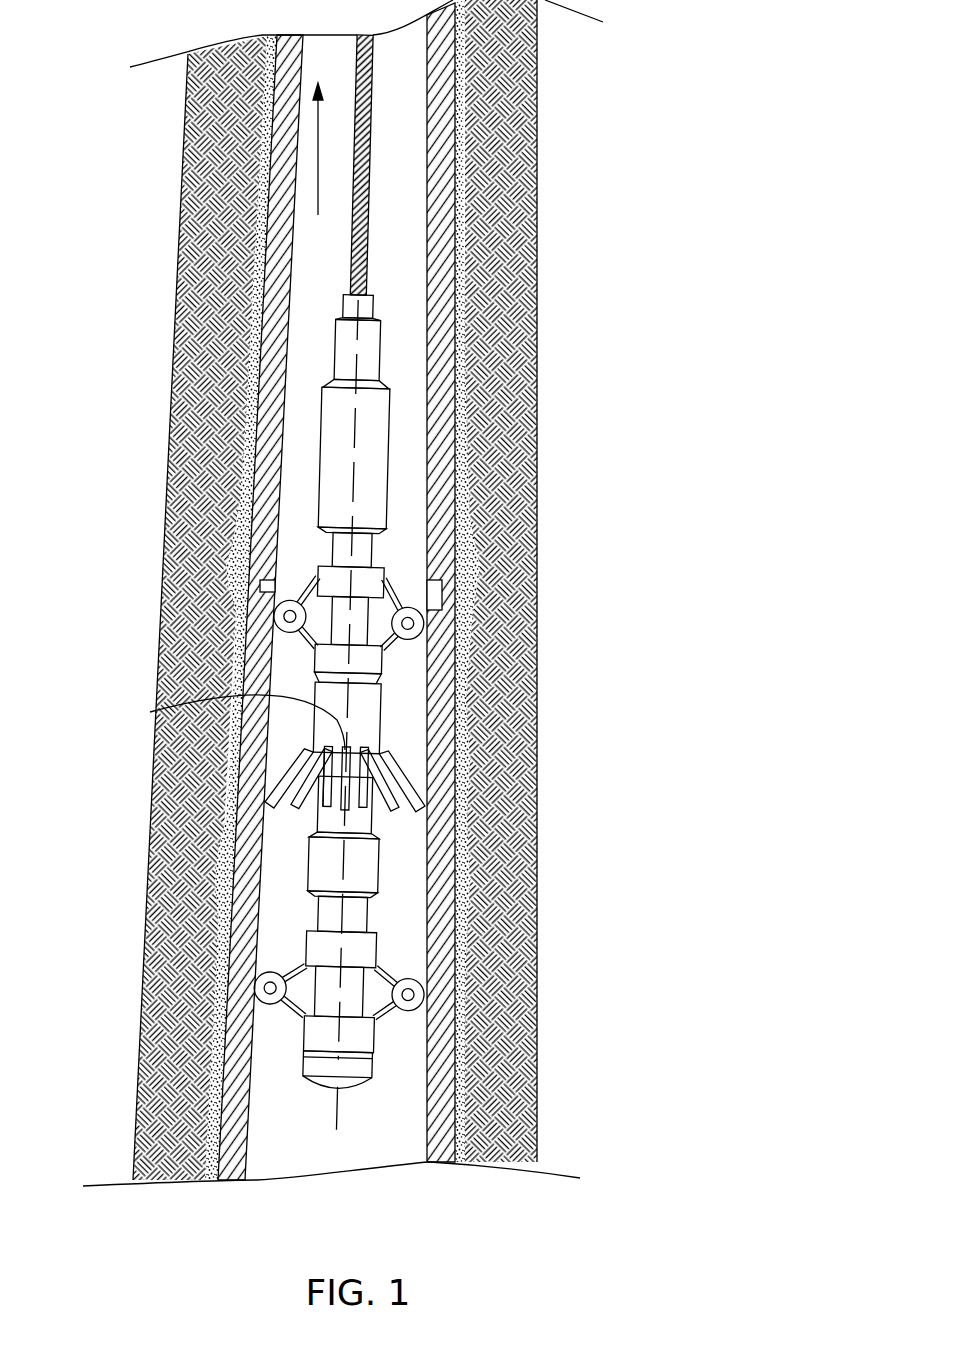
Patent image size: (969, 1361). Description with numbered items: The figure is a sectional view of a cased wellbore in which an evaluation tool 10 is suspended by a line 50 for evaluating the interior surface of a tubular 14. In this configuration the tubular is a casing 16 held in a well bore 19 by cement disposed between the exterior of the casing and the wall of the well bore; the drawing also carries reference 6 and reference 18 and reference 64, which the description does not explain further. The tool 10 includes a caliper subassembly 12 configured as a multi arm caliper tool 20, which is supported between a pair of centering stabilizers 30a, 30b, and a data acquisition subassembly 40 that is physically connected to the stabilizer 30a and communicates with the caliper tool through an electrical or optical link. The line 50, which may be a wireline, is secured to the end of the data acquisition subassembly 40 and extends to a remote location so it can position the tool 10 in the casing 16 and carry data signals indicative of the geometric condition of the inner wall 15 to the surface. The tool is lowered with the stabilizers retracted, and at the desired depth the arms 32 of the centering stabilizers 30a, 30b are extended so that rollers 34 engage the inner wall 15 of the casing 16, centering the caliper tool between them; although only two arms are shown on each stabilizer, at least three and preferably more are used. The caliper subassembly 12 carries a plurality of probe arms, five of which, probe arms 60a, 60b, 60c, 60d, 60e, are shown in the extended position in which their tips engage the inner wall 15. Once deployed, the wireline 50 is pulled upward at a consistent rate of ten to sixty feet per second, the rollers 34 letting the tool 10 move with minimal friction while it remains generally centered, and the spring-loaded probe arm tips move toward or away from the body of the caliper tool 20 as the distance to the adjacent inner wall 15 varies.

The direction of tool movement arrow 6 is at (317, 175).
The evaluation tool 10 is at (468, 580).
The caliper subassembly 12 is at (417, 763).
The tubular 14 is at (467, 973).
The inner wall 15 is at (250, 1150).
The casing 16 is at (470, 1020).
The formation 18 is at (475, 1093).
The well bore 19 is at (440, 1163).
The multi arm caliper tool 20 is at (380, 713).
The centering stabilizer 30a is at (275, 620).
The centering stabilizer 30b is at (265, 990).
The arms 32 is at (393, 657).
The rollers 34 is at (275, 607).
The data acquisition subassembly 40 is at (403, 463).
The line 50 is at (373, 198).
The probe arm 60a is at (390, 806).
The probe arm 60b is at (383, 805).
The probe arm 60c is at (318, 833).
The probe arm 60d is at (317, 807).
The probe arm 60e is at (320, 752).
The sensor pads 64 is at (360, 750).